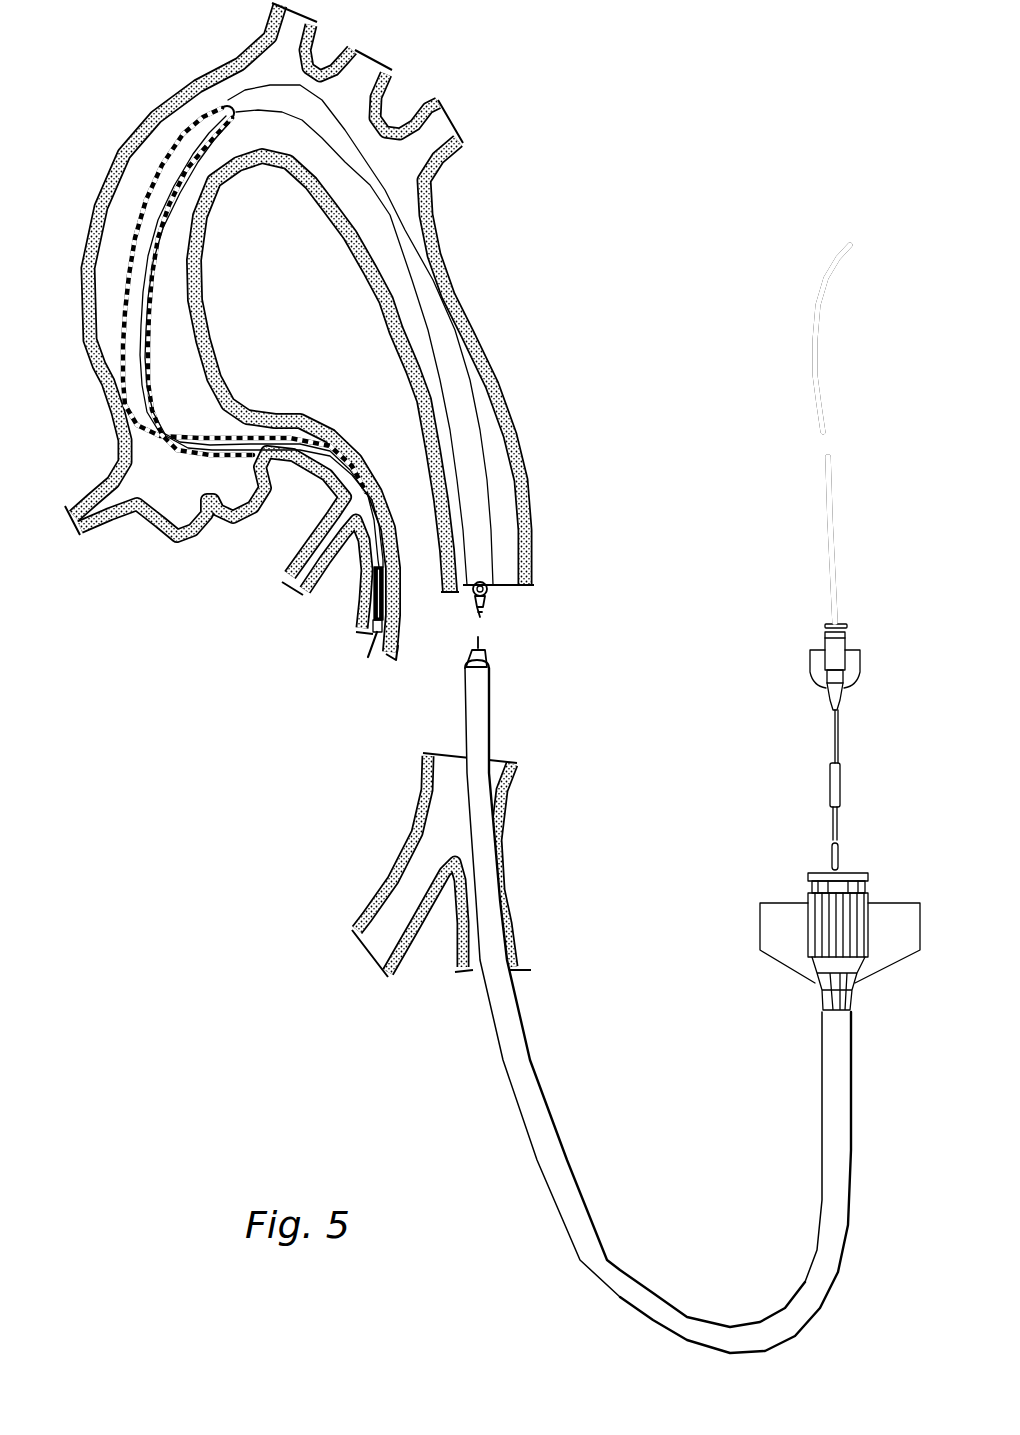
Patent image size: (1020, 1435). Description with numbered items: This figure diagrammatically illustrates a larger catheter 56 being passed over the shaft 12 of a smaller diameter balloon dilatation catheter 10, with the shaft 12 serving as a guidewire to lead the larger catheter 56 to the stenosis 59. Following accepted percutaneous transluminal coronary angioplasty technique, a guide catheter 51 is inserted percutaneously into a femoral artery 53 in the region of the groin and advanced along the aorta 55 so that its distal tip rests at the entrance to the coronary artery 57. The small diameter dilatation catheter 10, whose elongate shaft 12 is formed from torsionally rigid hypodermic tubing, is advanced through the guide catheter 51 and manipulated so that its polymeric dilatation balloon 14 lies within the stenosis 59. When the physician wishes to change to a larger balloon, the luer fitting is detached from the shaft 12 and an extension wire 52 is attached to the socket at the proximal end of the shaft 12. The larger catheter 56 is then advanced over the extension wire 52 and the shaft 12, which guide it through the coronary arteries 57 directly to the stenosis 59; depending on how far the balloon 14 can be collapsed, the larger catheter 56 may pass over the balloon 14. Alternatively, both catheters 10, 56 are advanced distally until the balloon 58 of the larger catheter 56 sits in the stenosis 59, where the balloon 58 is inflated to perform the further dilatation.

The balloon dilatation catheter 10 is at (120, 408).
The shaft 12 is at (376, 497).
The dilatation balloon 14 is at (368, 636).
The guide catheter 51 is at (142, 362).
The extension wire 52 is at (813, 363).
The femoral artery 53 is at (508, 870).
The aorta 55 is at (502, 420).
The larger catheter 56 is at (208, 126).
The coronary artery 57 is at (327, 430).
The balloon of the larger catheter 58 is at (135, 291).
The stenosis 59 is at (360, 593).